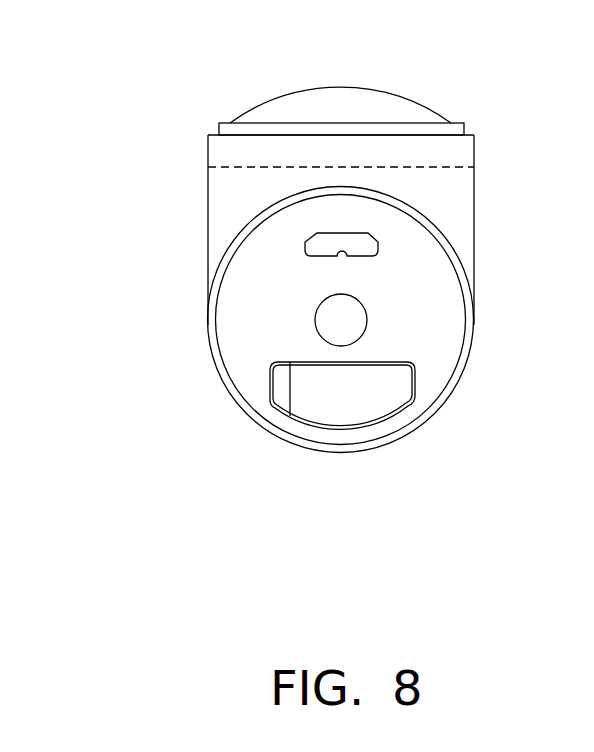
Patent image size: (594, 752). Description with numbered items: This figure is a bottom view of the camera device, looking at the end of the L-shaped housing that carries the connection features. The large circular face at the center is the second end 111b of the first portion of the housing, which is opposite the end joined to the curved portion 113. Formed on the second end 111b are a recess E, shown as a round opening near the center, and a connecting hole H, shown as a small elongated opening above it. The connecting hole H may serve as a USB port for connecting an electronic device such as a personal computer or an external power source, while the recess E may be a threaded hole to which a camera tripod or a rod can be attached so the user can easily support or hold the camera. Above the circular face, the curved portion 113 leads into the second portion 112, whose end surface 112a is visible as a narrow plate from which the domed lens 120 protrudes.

The lens 120 is at (342, 112).
The end surface 112a is at (466, 134).
The second portion 112 is at (452, 150).
The curved portion 113 is at (452, 198).
The second end 111b is at (418, 320).
The connecting hole H is at (317, 244).
The recess E is at (341, 319).